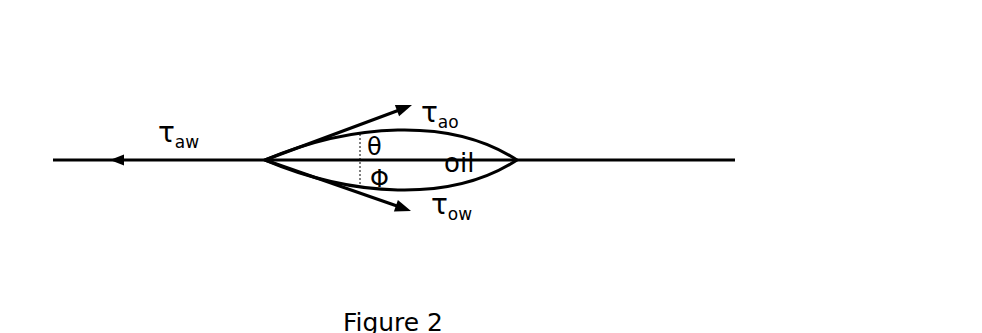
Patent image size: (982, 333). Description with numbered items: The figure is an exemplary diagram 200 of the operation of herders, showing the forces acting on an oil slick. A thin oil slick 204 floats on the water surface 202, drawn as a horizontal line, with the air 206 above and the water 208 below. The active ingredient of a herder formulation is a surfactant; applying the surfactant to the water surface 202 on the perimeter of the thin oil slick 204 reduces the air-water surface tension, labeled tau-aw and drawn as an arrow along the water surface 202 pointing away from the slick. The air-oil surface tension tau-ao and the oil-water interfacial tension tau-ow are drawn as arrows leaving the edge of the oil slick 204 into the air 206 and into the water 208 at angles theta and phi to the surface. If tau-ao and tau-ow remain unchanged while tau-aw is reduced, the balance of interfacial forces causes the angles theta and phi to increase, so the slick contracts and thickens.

The diagram 200 is at (122, 41).
The water surface 202 is at (680, 160).
The oil slick 204 is at (473, 140).
The air 206 is at (580, 53).
The water 208 is at (206, 208).